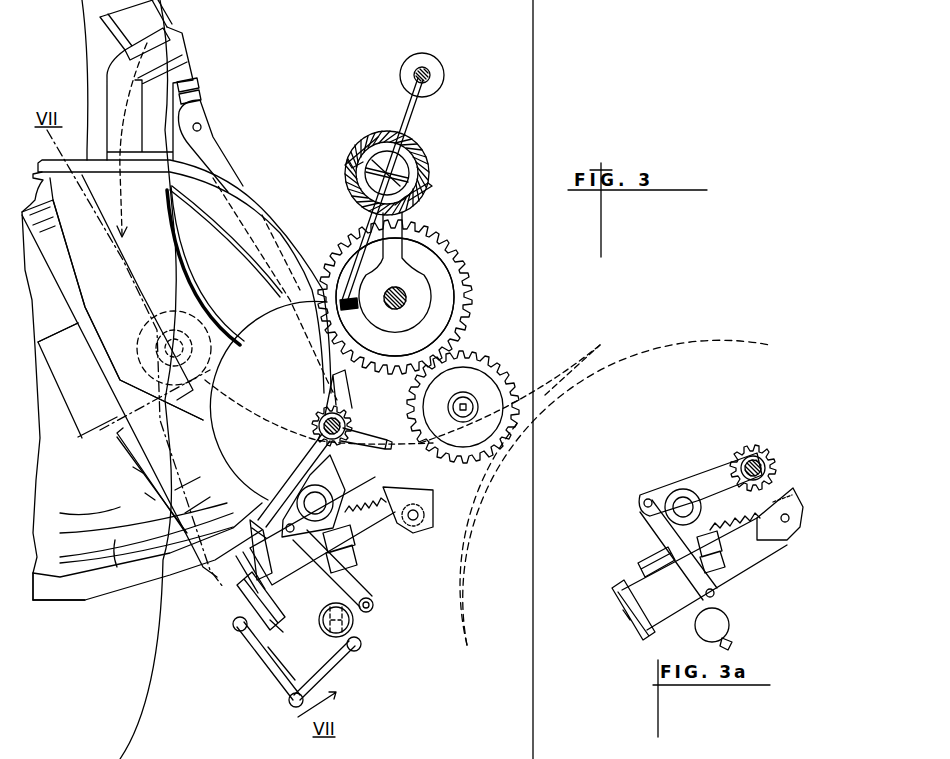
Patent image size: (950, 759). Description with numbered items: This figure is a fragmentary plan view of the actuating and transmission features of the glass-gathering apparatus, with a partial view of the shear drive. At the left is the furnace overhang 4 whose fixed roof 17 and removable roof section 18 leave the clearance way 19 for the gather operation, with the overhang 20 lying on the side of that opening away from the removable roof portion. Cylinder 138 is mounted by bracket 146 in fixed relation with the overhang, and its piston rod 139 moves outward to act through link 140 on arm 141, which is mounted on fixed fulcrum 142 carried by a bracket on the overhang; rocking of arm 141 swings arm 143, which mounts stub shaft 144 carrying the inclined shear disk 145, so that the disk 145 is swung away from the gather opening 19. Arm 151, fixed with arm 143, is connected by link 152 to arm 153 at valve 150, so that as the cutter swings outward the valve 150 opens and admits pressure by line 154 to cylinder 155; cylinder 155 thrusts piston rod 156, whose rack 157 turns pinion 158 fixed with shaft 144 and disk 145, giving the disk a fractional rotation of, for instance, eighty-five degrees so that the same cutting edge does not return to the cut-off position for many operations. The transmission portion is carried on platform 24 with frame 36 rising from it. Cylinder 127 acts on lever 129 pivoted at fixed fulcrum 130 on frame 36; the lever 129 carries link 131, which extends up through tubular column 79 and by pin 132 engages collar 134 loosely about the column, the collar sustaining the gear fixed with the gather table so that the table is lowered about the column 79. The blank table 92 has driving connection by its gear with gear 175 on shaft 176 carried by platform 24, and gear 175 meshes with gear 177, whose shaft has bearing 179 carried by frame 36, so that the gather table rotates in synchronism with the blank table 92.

In FIG. 3, the overhang 4 is at (67, 570).
In FIG. 3, the fixed roof 17 is at (130, 327).
In FIG. 3, the removable roof section 18 is at (115, 385).
In FIG. 3, the clearance way 19 is at (160, 277).
In FIG. 3, the overhang 20 is at (223, 220).
In FIG. 3, the platform 24 is at (502, 653).
In FIG. 3, the frame 36 is at (350, 327).
In FIG. 3, the tubular column 79 is at (427, 177).
In FIG. 3, the blank table 92 is at (703, 335).
In FIG. 3, the cylinder 127 is at (457, 78).
In FIG. 3, the lever 129 is at (413, 118).
In FIG. 3, the fixed fulcrum 130 is at (395, 272).
In FIG. 3, the link 131 is at (400, 167).
In FIG. 3, the pin 132 is at (378, 137).
In FIG. 3, the collar 134 is at (423, 203).
In FIG. 3, the cylinder 138 is at (170, 13).
In FIG. 3, the piston rod 139 is at (193, 90).
In FIG. 3, the link 140 is at (230, 160).
In FIG. 3, the arm 141 is at (368, 465).
In FIG. 3, the fixed fulcrum 142 is at (372, 486).
In FIG. 3a, the fixed fulcrum 142 is at (703, 478).
In FIG. 3, the arm 143 is at (313, 448).
In FIG. 3, the stub shaft 144 is at (322, 426).
In FIG. 3a, the stub shaft 144 is at (770, 462).
In FIG. 3, the shear disk 145 is at (217, 455).
In FIG. 3, the bracket 146 is at (187, 50).
In FIG. 3, the valve 150 is at (357, 627).
In FIG. 3a, the valve 150 is at (730, 623).
In FIG. 3, the arm 151 is at (297, 500).
In FIG. 3a, the arm 151 is at (648, 514).
In FIG. 3, the link 152 is at (380, 577).
In FIG. 3a, the link 152 is at (699, 579).
In FIG. 3, the arm 153 is at (373, 607).
In FIG. 3a, the arm 153 is at (722, 600).
In FIG. 3, the line 154 is at (343, 663).
In FIG. 3a, the line 154 is at (735, 645).
In FIG. 3, the cylinder 155 is at (247, 603).
In FIG. 3, the piston rod 156 is at (347, 535).
In FIG. 3a, the piston rod 156 is at (722, 557).
In FIG. 3, the rack 157 is at (405, 483).
In FIG. 3a, the rack 157 is at (755, 510).
In FIG. 3, the pinion 158 is at (360, 402).
In FIG. 3a, the pinion 158 is at (790, 440).
In FIG. 3, the gear 175 is at (500, 370).
In FIG. 3, the shaft 176 is at (480, 387).
In FIG. 3, the gear 177 is at (470, 303).
In FIG. 3, the bearing 179 is at (430, 297).